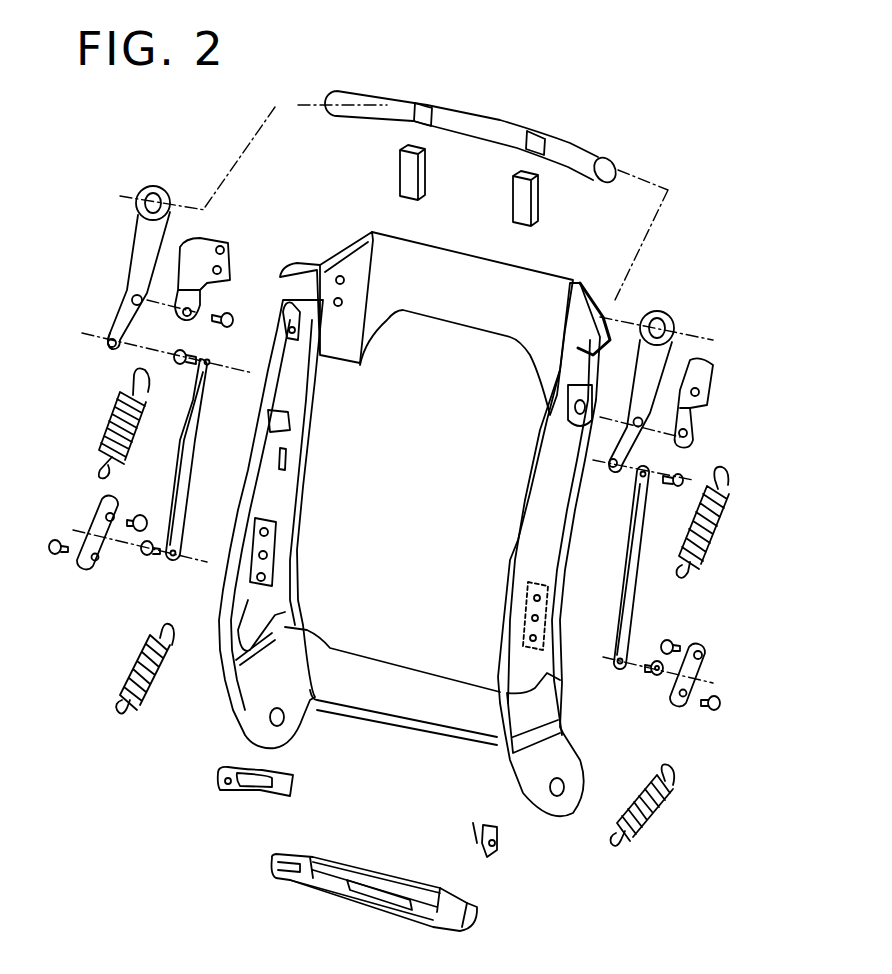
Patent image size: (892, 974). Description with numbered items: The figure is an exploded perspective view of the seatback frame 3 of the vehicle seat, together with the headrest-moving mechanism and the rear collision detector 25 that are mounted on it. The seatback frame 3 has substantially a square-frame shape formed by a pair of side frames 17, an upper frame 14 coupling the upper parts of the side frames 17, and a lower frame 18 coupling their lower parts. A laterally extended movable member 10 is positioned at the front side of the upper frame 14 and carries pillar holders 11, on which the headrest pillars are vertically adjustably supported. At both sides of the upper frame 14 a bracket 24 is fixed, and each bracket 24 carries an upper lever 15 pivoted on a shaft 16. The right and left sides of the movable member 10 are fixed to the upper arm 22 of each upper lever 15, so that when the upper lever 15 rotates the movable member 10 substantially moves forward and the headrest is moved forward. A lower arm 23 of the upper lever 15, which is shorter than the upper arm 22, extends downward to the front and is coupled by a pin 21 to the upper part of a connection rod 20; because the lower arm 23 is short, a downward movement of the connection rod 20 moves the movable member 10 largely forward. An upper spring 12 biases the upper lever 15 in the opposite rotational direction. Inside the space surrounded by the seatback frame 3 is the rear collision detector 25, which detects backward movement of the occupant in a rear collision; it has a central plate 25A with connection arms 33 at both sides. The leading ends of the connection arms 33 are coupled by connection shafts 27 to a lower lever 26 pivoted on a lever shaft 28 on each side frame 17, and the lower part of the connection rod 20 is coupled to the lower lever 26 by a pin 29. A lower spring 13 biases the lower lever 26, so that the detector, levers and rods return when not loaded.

The seatback frame 3 is at (414, 524).
The movable member 10 is at (475, 117).
The pillar holders 11 is at (425, 171).
The upper spring 12 is at (103, 427).
The lower spring 13 is at (160, 680).
The upper frame 14 is at (455, 305).
The upper lever 15 is at (140, 233).
The shaft 16 is at (232, 312).
The side frames 17 is at (287, 520).
The lower frame 18 is at (422, 700).
The connection rod 20 is at (170, 498).
The pin 21 is at (176, 365).
The upper arm 22 is at (158, 186).
The lower arm 23 is at (115, 315).
The bracket 24 is at (210, 240).
The rear collision detector 25 is at (375, 892).
The central plate 25A is at (363, 907).
The lower lever 26 is at (110, 550).
The connection shafts 27 is at (55, 555).
The lever shaft 28 is at (147, 520).
The pin 29 is at (147, 556).
The connection arms 33 is at (253, 790).